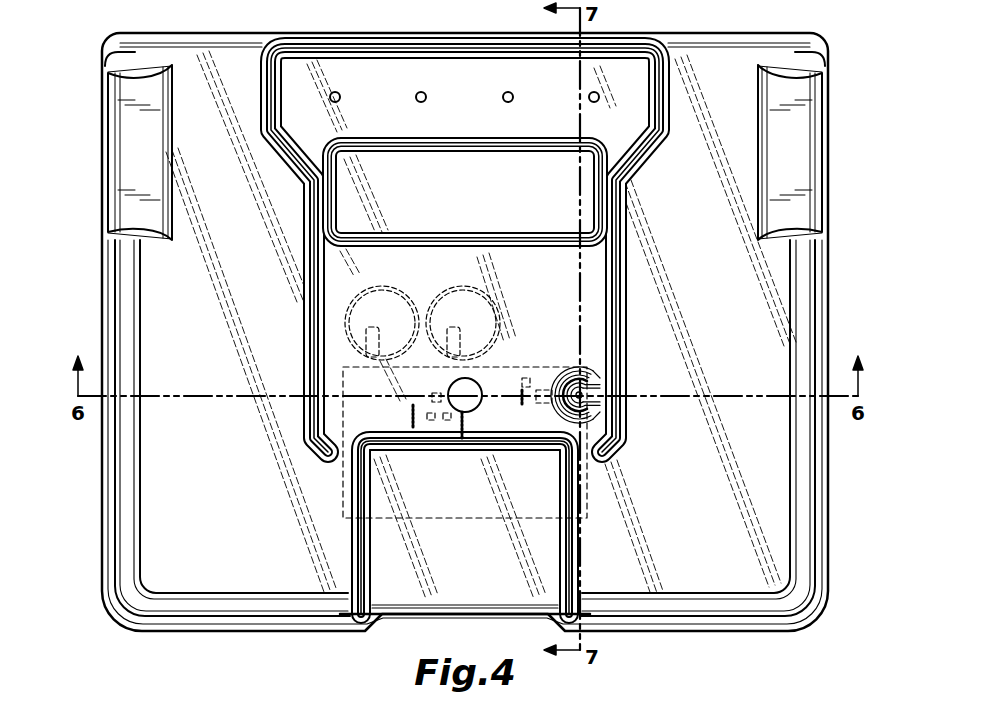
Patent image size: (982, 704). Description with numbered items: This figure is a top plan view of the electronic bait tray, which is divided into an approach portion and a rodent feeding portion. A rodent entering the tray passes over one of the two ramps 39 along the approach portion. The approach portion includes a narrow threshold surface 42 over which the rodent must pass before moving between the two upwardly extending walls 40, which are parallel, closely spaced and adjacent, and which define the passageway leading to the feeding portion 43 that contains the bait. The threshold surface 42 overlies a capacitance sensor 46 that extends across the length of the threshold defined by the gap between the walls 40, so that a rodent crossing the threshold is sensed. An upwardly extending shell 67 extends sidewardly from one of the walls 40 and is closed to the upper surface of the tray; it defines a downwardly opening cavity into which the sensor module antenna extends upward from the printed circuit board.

The ramp 39 is at (828, 150).
The upwardly extending wall 40 is at (618, 306).
The threshold surface 42 is at (449, 497).
The feeding portion 43 is at (449, 105).
The capacitance sensor 46 is at (486, 521).
The shell 67 is at (565, 383).